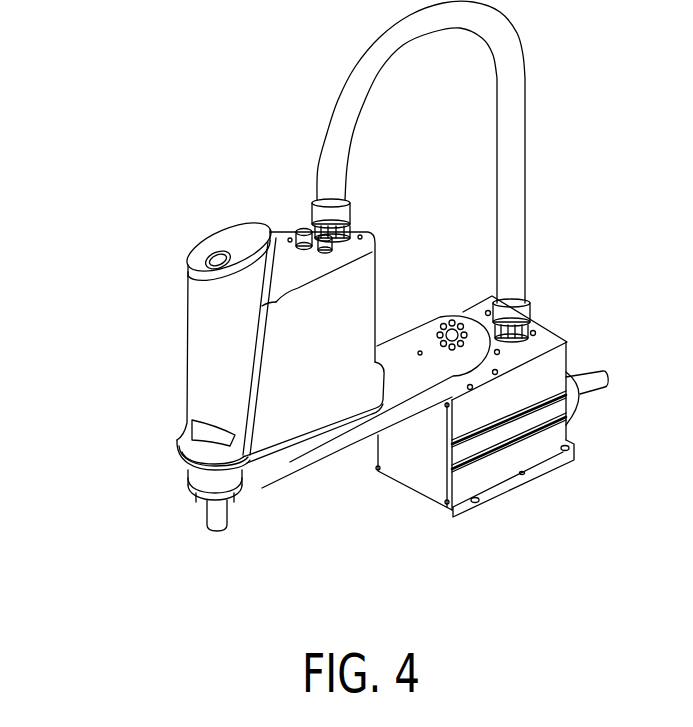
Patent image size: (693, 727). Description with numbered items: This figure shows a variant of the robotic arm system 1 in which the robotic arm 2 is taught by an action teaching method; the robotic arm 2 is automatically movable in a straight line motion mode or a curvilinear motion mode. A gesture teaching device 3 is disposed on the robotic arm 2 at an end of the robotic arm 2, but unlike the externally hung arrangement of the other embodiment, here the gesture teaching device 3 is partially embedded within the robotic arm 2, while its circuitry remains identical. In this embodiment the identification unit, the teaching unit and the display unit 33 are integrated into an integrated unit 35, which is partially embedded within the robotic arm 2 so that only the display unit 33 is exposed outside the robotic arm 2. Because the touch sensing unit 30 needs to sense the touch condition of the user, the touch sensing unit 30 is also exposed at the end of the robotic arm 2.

The robotic arm system 1 is at (568, 173).
The robotic arm 2 is at (193, 385).
The gesture teaching device 3 is at (149, 501).
The touch sensing unit 30 is at (205, 495).
The display unit 33 is at (237, 446).
The integrated unit 35 is at (193, 436).